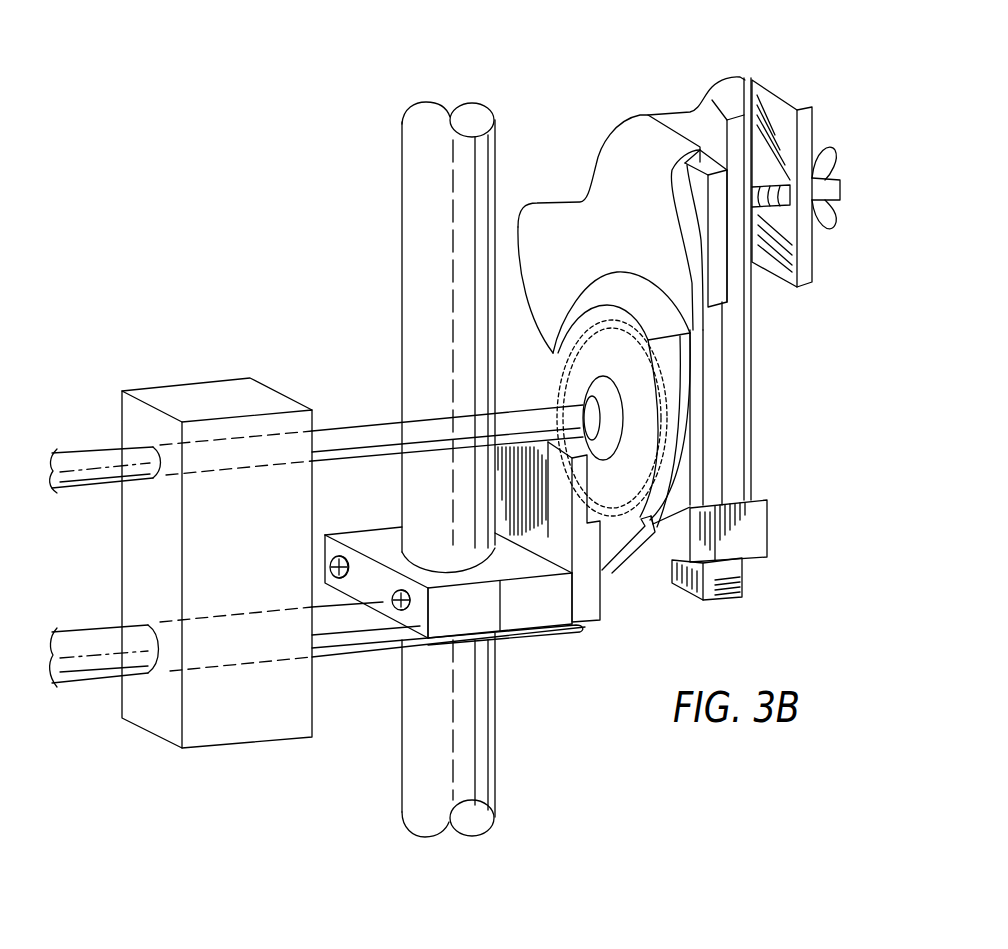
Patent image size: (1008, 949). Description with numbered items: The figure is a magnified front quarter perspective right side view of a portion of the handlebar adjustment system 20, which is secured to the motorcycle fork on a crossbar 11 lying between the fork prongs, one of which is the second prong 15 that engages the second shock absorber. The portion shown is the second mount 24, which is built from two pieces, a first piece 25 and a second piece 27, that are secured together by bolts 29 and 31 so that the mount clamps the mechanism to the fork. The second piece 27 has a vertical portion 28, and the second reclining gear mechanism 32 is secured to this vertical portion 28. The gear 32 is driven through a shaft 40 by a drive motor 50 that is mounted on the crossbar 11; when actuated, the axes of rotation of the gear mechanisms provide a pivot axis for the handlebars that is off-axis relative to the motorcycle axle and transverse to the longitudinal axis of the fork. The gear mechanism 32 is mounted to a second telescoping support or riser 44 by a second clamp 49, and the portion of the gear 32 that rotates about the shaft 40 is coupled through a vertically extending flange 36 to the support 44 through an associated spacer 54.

The crossbar 11 is at (510, 640).
The second prong 15 is at (458, 710).
The handlebar adjustment system 20 is at (290, 307).
The second mount 24 is at (355, 569).
The first piece 25 is at (375, 592).
The second piece 27 is at (532, 614).
The vertical portion 28 is at (596, 598).
The bolt 29 is at (336, 556).
The bolt 31 is at (396, 610).
The second reclining gear mechanism 32 is at (583, 380).
The vertically extending flange 36 is at (607, 228).
The shaft 40 is at (370, 426).
The second telescoping support or riser 44 is at (772, 380).
The second clamp 49 is at (827, 118).
The drive motor 50 is at (217, 370).
The spacer 54 is at (720, 293).